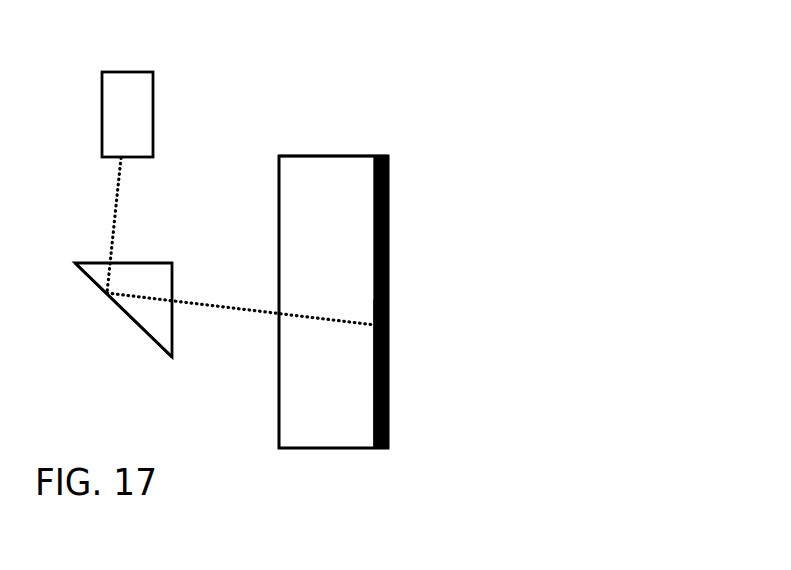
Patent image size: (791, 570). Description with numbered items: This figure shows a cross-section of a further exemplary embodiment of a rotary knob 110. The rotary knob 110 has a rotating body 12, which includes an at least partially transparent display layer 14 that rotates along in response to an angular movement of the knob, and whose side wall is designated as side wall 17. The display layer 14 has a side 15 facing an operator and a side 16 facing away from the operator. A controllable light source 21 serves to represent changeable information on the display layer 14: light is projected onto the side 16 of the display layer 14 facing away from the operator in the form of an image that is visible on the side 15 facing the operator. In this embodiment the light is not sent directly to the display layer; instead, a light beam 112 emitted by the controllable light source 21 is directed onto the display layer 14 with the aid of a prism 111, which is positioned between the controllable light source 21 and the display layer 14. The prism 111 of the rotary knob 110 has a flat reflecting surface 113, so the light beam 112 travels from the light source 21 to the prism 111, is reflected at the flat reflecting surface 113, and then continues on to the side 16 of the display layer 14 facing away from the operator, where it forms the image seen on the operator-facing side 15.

The rotary knob 110 is at (412, 140).
The rotating body 12 is at (359, 171).
The side wall of the rotating body 17 is at (305, 157).
The display layer 14 is at (383, 256).
The side facing an operator 15 is at (388, 348).
The side facing away from the operator 16 is at (372, 436).
The controllable light source 21 is at (127, 81).
The light beam 112 is at (115, 211).
The prism 111 is at (147, 264).
The flat reflecting surface 113 is at (130, 315).